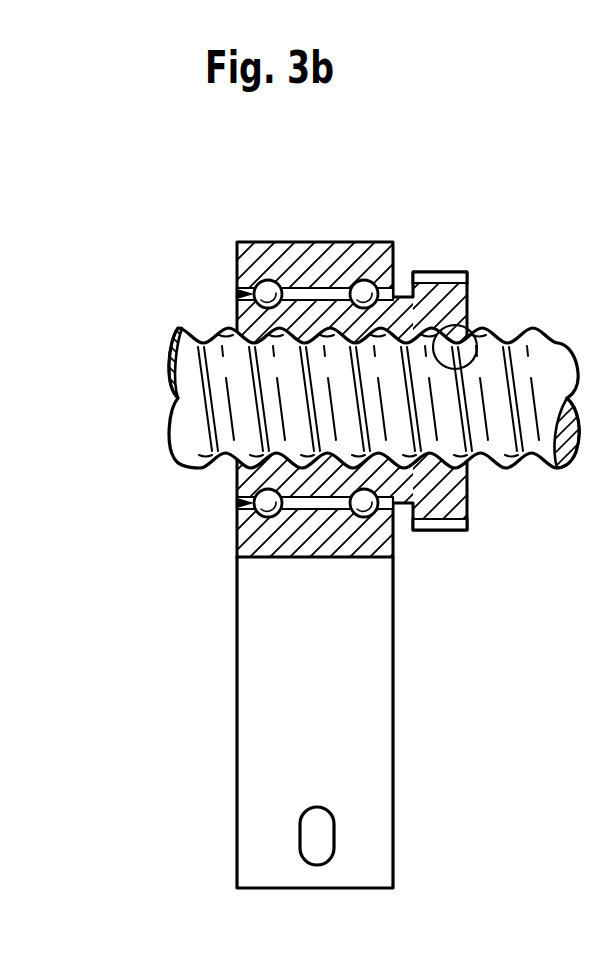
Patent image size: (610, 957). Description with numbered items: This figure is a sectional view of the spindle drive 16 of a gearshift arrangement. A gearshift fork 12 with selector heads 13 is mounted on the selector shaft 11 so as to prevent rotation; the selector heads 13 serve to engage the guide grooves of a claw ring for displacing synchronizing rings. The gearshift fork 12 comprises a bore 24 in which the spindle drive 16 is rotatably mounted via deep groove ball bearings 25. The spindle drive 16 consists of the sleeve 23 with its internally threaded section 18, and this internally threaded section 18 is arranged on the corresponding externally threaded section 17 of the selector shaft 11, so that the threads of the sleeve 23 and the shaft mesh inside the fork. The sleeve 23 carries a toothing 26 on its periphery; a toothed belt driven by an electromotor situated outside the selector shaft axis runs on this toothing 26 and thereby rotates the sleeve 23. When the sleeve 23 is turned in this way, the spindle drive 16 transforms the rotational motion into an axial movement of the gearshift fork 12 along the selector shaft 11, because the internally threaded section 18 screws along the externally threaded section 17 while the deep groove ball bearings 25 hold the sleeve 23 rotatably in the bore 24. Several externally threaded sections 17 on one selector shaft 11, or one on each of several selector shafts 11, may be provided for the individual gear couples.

The selector shaft 11 is at (528, 476).
The gearshift fork 12 is at (258, 702).
The selector heads 13 is at (312, 835).
The spindle drive 16 is at (314, 230).
The externally threaded section 17 is at (534, 327).
The internally threaded section 18 is at (482, 343).
The sleeve 23 is at (282, 474).
The bore 24 is at (250, 295).
The deep groove ball bearings 25 is at (268, 285).
The toothing 26 is at (438, 521).